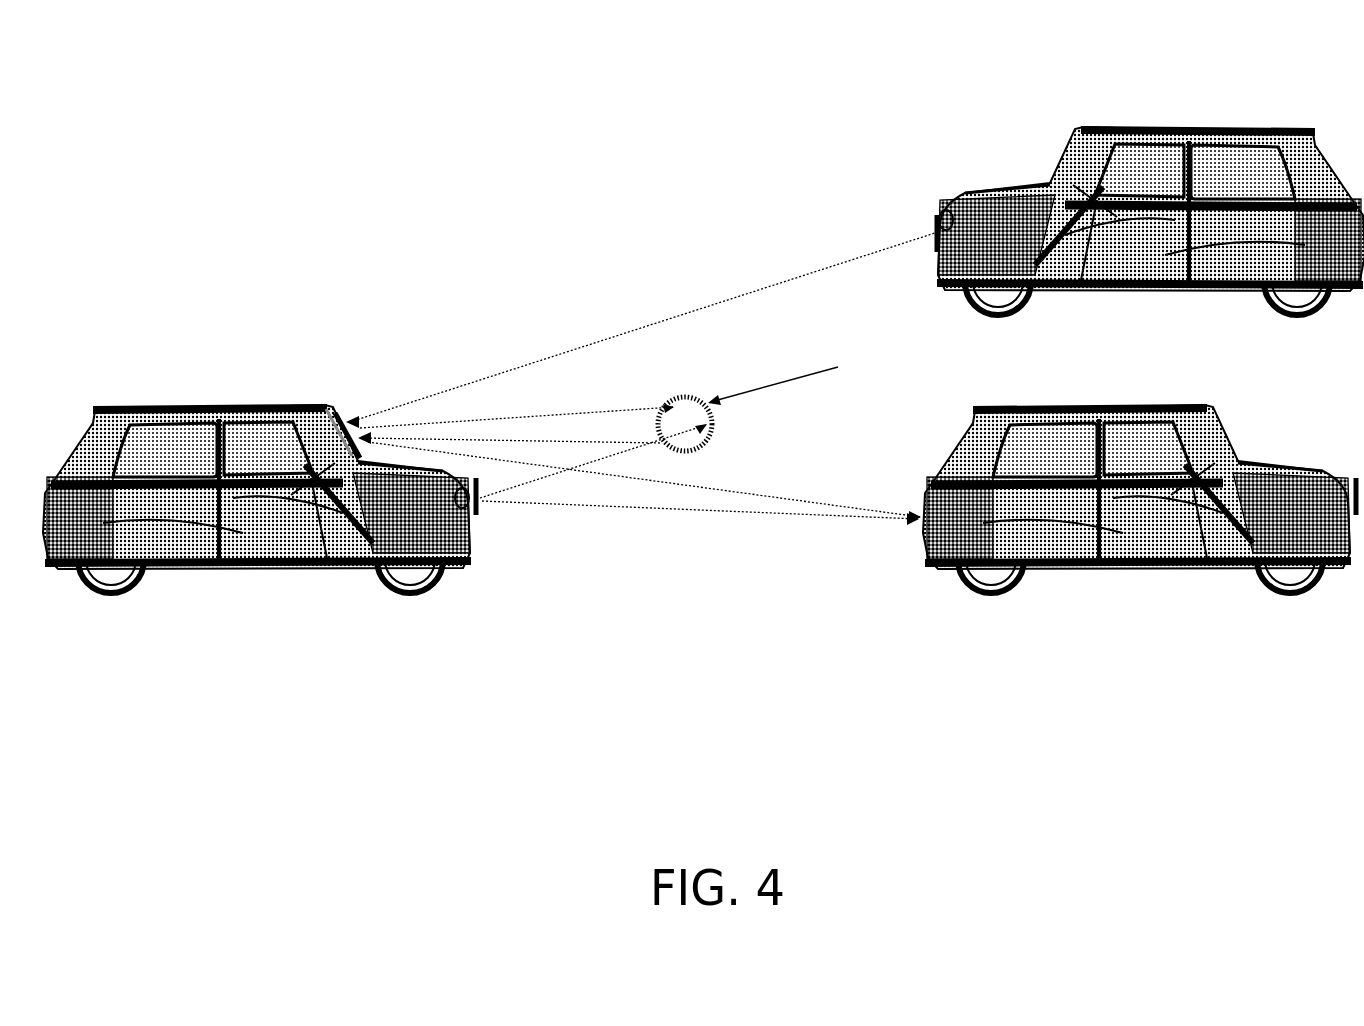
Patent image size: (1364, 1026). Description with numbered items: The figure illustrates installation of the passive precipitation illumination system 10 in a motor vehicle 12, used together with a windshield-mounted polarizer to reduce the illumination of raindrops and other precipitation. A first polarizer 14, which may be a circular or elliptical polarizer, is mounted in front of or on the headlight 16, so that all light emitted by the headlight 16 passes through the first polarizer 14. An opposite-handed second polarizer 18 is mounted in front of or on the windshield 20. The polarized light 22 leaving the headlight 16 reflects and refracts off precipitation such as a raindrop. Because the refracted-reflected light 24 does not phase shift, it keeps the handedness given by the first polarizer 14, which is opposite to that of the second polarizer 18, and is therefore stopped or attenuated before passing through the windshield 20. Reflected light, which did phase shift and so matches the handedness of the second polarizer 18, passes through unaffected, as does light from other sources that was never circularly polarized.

The passive precipitation illumination system 10 is at (573, 288).
The motor vehicle 12 is at (233, 576).
The first polarizer 14 is at (490, 511).
The headlight 16 is at (456, 504).
The second polarizer 18 is at (334, 406).
The windshield 20 is at (411, 476).
The polarized light 22 is at (547, 438).
The refracted-reflected light 24 is at (795, 278).